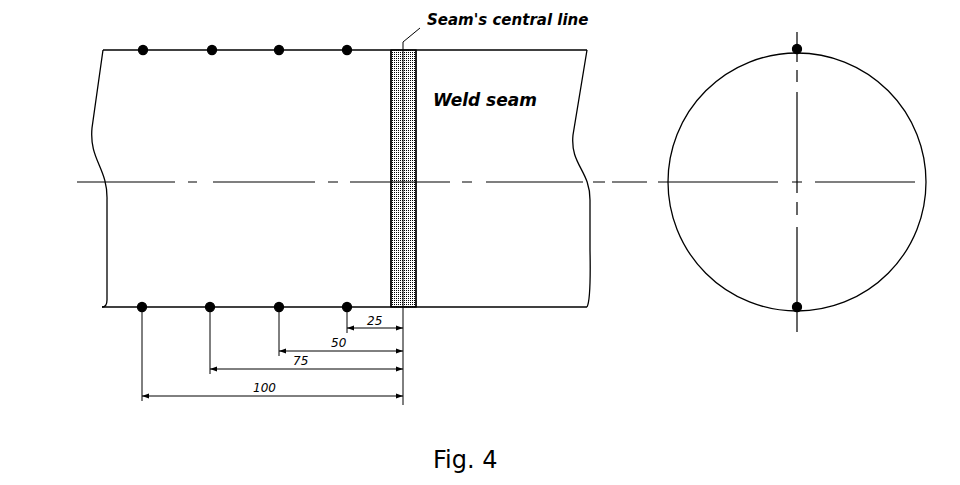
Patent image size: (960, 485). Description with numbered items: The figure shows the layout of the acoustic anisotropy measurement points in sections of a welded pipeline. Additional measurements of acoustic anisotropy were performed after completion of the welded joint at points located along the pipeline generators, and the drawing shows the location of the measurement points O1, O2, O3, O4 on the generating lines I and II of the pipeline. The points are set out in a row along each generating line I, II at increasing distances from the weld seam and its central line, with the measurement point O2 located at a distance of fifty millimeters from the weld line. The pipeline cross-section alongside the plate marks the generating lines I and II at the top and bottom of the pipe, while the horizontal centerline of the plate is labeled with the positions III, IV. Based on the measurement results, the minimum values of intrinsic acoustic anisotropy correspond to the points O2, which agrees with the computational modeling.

The measurement point O1 is at (346, 169).
The measurement point O2 is at (278, 169).
The measurement point O3 is at (211, 169).
The measurement point O4 is at (142, 169).
The generating line I is at (443, 180).
The generating line II is at (438, 319).
The generatrix position III of pipe III is at (330, 183).
The generatrix position IV of pipe IV is at (779, 171).